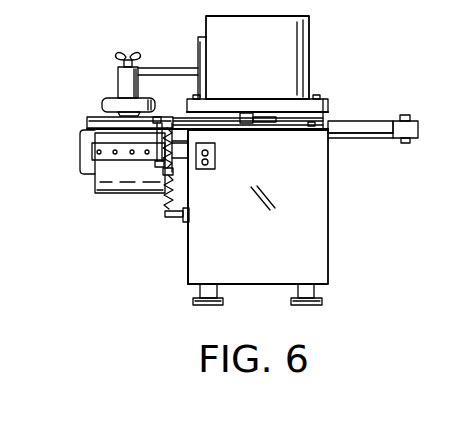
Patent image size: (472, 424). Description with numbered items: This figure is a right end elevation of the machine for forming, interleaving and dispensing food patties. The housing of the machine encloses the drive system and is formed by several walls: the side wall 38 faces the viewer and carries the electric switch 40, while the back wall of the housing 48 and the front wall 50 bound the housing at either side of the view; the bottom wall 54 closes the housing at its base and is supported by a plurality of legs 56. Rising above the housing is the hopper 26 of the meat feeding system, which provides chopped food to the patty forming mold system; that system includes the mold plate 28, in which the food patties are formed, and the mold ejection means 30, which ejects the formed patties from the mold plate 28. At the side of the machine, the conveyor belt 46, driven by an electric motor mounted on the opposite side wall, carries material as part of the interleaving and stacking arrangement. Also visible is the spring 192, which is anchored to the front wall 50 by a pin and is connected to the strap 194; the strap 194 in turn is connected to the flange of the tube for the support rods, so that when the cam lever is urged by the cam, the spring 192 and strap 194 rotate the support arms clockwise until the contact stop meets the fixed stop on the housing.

The hopper 26 is at (309, 30).
The mold plate 28 is at (368, 116).
The mold ejection means 30 is at (112, 65).
The side wall 38 is at (246, 235).
The electric switch 40 is at (216, 153).
The conveyor belt 46 is at (115, 194).
The back wall of the housing 48 is at (328, 206).
The front wall 50 is at (188, 247).
The bottom wall 54 is at (249, 286).
The legs 56 is at (303, 292).
The spring 192 is at (168, 198).
The strap 194 is at (165, 160).